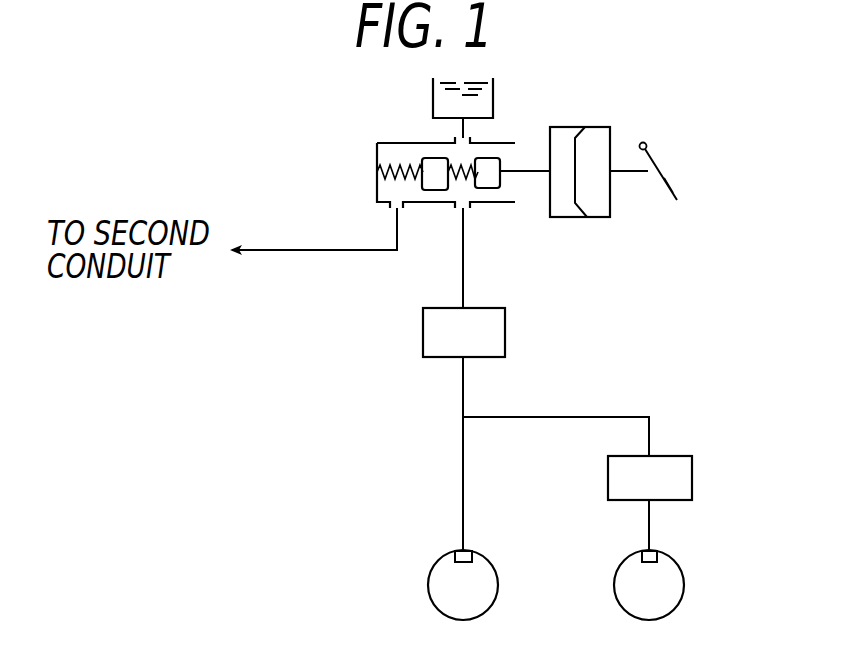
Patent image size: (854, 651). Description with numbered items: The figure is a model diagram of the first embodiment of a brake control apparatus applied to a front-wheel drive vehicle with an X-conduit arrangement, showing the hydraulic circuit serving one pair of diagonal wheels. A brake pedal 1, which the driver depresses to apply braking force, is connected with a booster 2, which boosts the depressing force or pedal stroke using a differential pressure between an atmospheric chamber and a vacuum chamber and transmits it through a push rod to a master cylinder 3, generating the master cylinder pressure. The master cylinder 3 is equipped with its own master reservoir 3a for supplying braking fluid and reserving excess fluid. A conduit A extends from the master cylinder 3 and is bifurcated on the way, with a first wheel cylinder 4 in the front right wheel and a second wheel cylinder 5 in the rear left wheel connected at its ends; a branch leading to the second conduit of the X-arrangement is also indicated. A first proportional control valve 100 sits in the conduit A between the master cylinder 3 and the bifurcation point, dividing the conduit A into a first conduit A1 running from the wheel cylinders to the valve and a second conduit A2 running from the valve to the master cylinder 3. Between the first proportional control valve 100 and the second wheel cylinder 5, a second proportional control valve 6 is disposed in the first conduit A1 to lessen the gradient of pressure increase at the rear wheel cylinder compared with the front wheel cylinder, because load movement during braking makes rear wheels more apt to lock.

The brake pedal 1 is at (653, 172).
The booster 2 is at (597, 127).
The master cylinder 3 is at (377, 155).
The master reservoir 3a is at (433, 95).
The first wheel cylinder 4 is at (472, 553).
The second wheel cylinder 5 is at (646, 549).
The second proportional control valve 6 is at (692, 466).
The first proportional control valve 100 is at (505, 326).
The conduit A is at (465, 245).
The first conduit A1 is at (698, 527).
The second conduit A2 is at (463, 270).